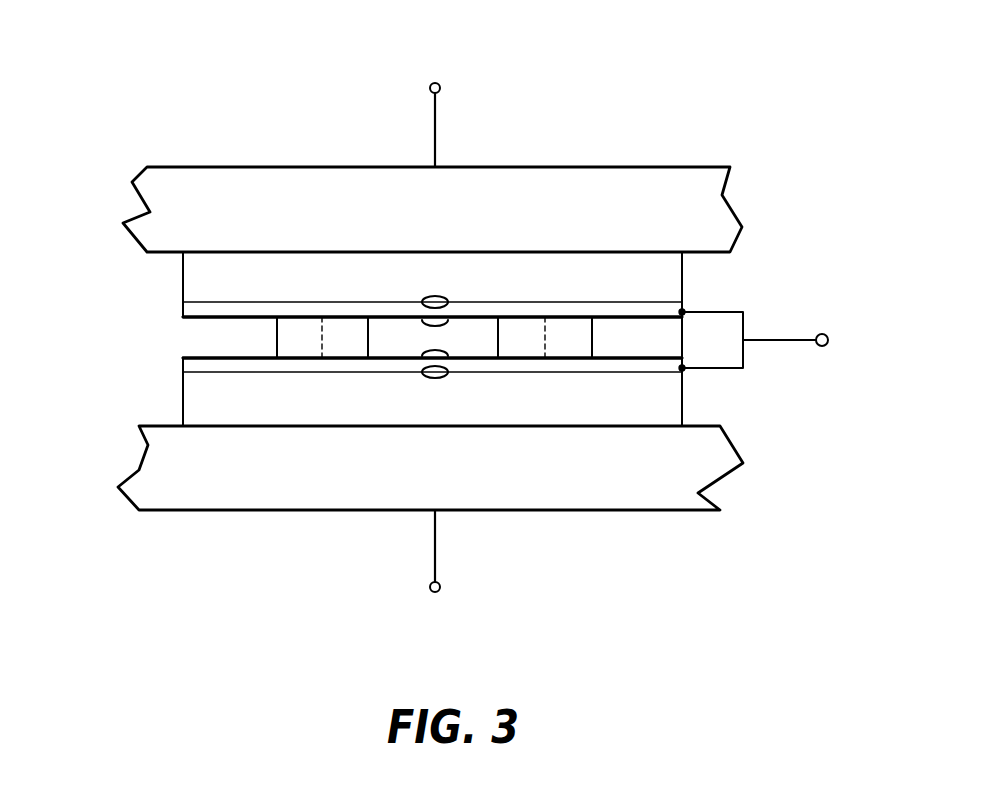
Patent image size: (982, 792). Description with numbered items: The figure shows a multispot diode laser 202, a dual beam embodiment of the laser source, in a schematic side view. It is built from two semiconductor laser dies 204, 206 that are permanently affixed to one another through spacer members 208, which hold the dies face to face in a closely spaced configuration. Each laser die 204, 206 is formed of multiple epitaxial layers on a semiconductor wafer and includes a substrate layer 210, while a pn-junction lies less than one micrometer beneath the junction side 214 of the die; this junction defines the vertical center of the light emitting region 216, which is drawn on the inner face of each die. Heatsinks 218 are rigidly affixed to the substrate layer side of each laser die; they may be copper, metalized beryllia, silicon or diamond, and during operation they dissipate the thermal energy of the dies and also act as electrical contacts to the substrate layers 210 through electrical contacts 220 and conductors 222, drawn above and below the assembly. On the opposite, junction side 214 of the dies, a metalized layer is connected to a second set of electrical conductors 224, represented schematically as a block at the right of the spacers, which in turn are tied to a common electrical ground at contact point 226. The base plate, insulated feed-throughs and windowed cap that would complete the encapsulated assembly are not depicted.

The multispot diode laser 202 is at (247, 108).
The laser die 204 is at (140, 282).
The laser die 206 is at (140, 404).
The spacer member 208 is at (378, 336).
The substrate layer 210 is at (682, 270).
The junction side 214 is at (276, 287).
The light emitting region 216 is at (435, 296).
The heatsink 218 is at (722, 195).
The electrical contact 220 is at (440, 84).
The conductor 222 is at (435, 137).
The second set of electrical conductors 224 is at (745, 322).
The contact point 226 is at (828, 340).